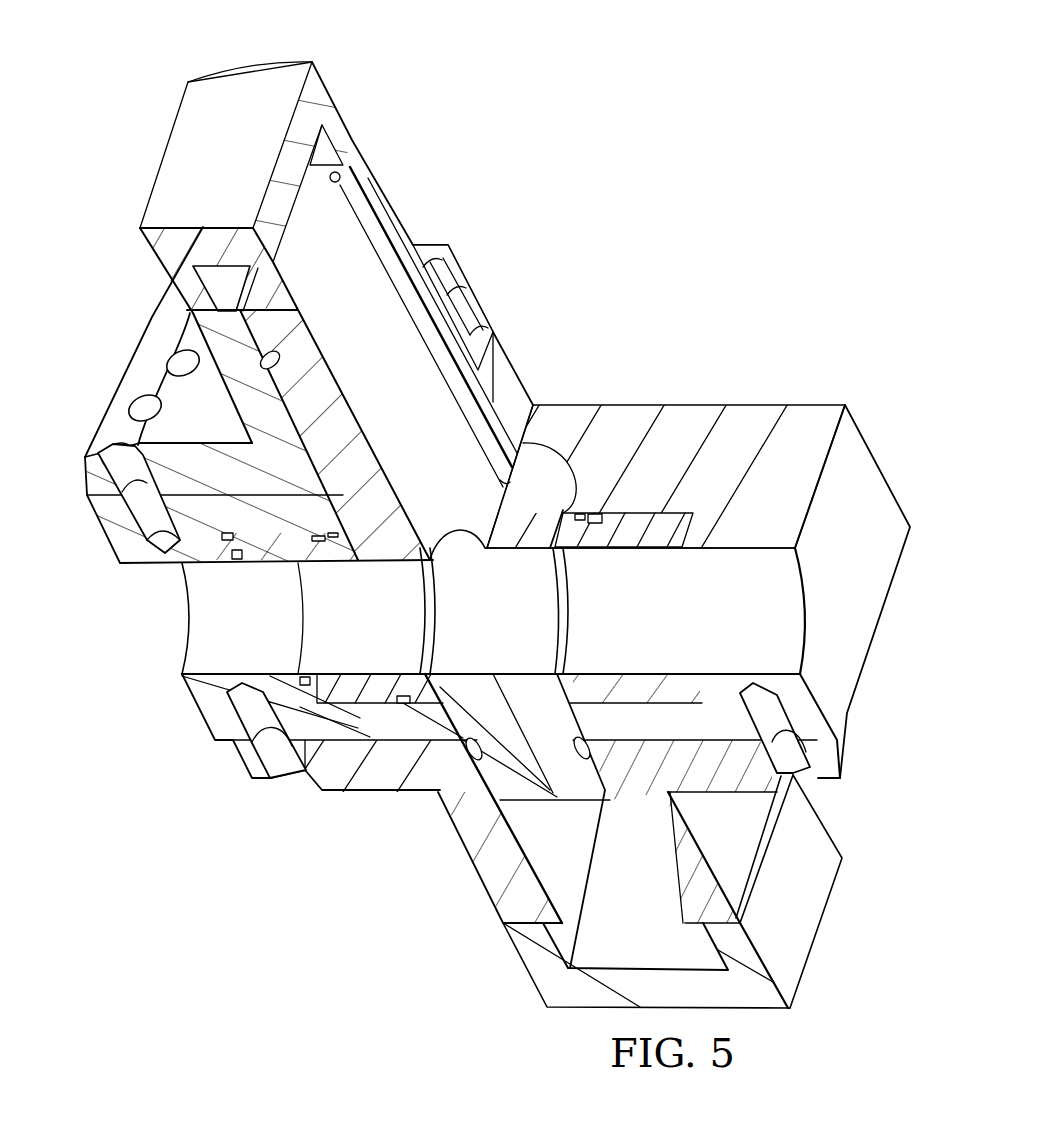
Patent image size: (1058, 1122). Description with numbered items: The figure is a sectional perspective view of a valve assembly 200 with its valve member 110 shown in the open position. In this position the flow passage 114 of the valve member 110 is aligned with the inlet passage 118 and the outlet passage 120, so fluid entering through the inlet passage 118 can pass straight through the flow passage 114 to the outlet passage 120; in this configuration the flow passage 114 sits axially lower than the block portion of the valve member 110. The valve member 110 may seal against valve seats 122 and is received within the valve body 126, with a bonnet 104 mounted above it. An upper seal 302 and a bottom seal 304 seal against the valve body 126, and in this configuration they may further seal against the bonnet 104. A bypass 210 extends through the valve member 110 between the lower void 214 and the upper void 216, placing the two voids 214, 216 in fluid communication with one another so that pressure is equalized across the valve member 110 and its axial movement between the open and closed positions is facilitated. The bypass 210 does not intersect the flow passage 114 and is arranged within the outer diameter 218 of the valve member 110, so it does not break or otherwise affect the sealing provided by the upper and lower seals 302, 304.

The valve assembly 200 is at (640, 98).
The bonnet 104 is at (107, 427).
The valve member 110 is at (302, 237).
The flow passage 114 is at (553, 618).
The inlet passage 118 is at (198, 618).
The outlet passage 120 is at (800, 618).
The valve seats 122 is at (270, 553).
The valve body 126 is at (690, 413).
The bypass 210 is at (360, 222).
The lower void 214 is at (587, 945).
The upper void 216 is at (217, 283).
The outer diameter 218 is at (325, 145).
The upper seal 302 is at (277, 358).
The bottom seal 304 is at (590, 750).